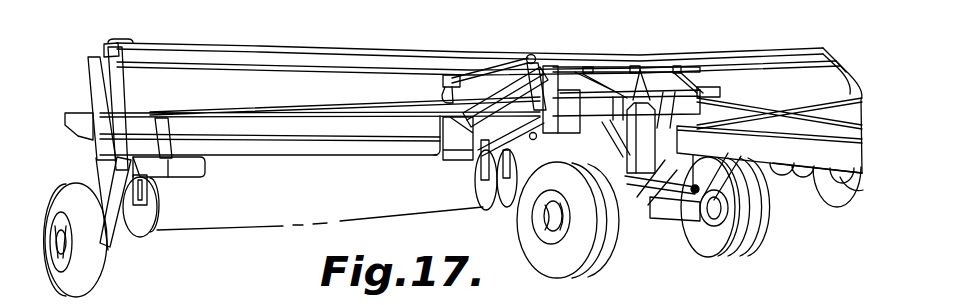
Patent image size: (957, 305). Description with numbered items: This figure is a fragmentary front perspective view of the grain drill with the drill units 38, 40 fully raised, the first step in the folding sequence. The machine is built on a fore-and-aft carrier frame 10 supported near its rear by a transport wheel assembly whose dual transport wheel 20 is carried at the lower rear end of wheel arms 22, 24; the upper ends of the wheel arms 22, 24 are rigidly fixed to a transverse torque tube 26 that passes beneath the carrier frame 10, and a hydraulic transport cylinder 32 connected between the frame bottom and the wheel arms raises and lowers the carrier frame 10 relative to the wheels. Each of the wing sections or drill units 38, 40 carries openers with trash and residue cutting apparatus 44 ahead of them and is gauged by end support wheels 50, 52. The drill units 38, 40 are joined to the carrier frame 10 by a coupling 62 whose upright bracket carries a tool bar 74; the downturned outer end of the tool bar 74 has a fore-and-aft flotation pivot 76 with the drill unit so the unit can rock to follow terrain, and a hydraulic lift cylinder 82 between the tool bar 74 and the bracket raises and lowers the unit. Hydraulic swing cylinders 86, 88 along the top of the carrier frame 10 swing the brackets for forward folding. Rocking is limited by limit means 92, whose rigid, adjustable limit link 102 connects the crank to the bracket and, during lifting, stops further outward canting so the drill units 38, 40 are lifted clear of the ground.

The carrier frame 10 is at (800, 158).
The dual transport wheel 20 is at (717, 253).
The wheel arm 22 is at (637, 217).
The wheel arm 24 is at (700, 212).
The transverse torque tube 26 is at (700, 151).
The hydraulic transport cylinder 32 is at (613, 140).
The drill unit 38 is at (260, 44).
The drill unit 40 is at (708, 46).
The trash and residue cutting apparatus 44 is at (147, 230).
The end support wheel 50 is at (97, 262).
The end support wheel 52 is at (842, 203).
The coupling 62 is at (542, 63).
The tool bar 74 is at (478, 162).
The flotation pivot 76 is at (475, 183).
The hydraulic lift cylinder 82 is at (534, 140).
The hydraulic swing cylinder 86 is at (632, 50).
The hydraulic swing cylinder 88 is at (653, 68).
The limit means 92 is at (508, 53).
The limit link 102 is at (499, 50).